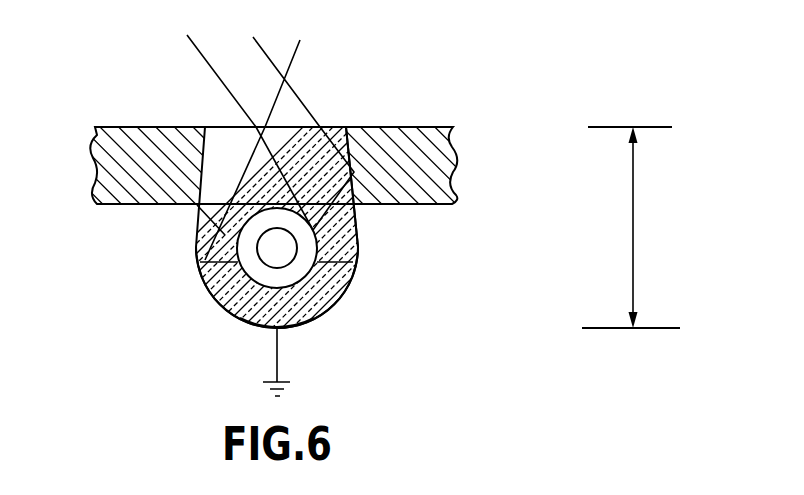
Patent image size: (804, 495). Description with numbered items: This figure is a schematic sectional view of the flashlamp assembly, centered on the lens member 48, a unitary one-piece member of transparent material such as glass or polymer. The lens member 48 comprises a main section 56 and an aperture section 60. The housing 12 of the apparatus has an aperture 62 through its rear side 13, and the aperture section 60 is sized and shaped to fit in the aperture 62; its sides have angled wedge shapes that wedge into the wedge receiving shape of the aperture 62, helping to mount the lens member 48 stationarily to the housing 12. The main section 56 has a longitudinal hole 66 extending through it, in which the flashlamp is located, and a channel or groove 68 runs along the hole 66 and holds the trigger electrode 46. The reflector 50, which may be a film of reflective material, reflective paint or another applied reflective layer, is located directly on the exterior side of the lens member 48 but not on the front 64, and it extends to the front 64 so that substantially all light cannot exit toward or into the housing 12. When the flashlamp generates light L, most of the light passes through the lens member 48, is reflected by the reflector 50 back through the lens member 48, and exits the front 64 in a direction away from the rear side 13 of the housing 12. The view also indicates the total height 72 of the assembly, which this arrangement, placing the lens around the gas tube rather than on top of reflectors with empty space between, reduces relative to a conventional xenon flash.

The housing 12 is at (432, 156).
The rear side 13 is at (443, 127).
The aperture 62 is at (153, 127).
The front 64 is at (218, 127).
The main section 56 is at (198, 237).
The lens member 48 is at (358, 250).
The aperture section 60 is at (358, 220).
The longitudinal hole 66 is at (338, 297).
The groove 68 is at (313, 316).
The reflector 50 is at (308, 320).
The trigger electrode 46 is at (258, 317).
The light L is at (307, 97).
The total height 72 is at (633, 215).